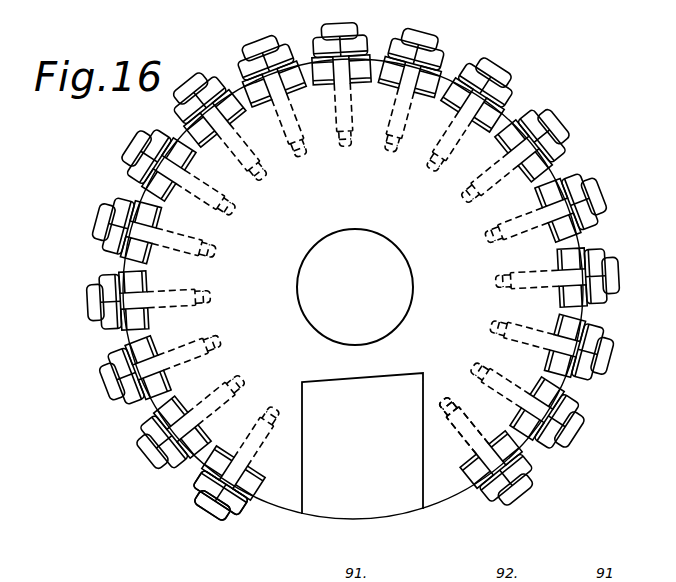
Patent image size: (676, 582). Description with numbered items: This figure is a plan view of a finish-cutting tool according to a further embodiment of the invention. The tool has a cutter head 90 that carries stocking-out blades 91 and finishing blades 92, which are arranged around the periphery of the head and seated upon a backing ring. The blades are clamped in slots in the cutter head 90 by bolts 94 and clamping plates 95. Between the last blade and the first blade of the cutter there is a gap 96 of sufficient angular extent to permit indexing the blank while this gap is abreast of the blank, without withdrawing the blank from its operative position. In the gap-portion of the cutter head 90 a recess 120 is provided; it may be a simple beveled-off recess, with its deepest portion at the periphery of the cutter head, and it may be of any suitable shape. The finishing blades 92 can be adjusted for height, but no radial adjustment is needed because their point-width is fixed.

The cutter head 90 is at (369, 287).
The stocking-out blades 91 is at (232, 112).
The finishing blades 92 is at (475, 455).
The bolts 94 is at (205, 504).
The clamping plates 95 is at (210, 490).
The gap 96 is at (447, 500).
The recess 120 is at (385, 504).